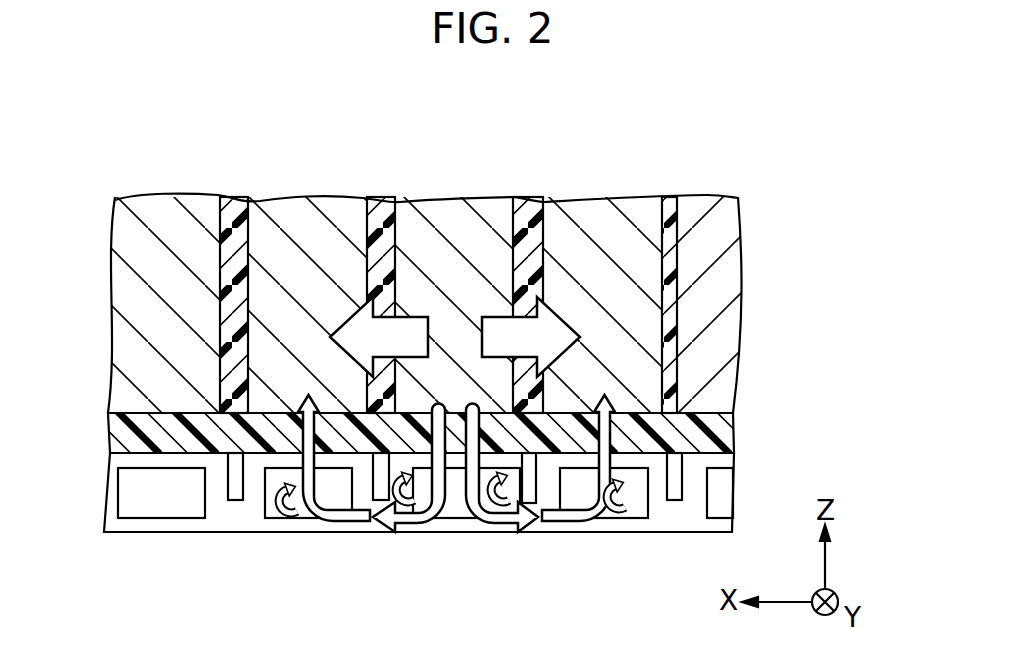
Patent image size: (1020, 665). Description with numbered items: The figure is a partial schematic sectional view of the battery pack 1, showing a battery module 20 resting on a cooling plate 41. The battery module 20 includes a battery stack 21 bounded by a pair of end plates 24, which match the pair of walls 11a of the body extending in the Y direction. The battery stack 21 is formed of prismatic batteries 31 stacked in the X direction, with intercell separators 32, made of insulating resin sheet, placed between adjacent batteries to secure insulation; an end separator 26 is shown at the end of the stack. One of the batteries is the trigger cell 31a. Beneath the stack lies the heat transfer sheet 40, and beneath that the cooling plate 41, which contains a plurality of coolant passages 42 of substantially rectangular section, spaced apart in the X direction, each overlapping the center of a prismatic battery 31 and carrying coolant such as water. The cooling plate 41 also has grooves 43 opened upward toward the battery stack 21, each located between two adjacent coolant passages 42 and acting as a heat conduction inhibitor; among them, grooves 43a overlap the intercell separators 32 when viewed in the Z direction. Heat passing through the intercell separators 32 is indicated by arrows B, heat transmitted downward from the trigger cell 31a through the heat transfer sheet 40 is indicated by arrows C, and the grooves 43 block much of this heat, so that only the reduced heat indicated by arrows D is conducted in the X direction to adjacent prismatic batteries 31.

The battery pack 1 is at (491, 166).
The wall 11a is at (717, 275).
The battery module 20 is at (630, 198).
The battery stack 21 is at (275, 198).
The end plate 24 is at (717, 323).
The end separator 26 is at (669, 200).
The prismatic battery 31 is at (165, 225).
The trigger cell 31a is at (448, 222).
The intercell separator 32 is at (234, 200).
The heat transfer sheet 40 is at (717, 431).
The cooling plate 41 is at (218, 507).
The coolant passage 42 is at (148, 470).
The groove 43 is at (678, 500).
The separator overlap groove 43a is at (235, 500).
The arrow indicating heat transmitted via intercell separators B is at (362, 327).
The arrow indicating heat transmitted downward via heat transfer sheet C is at (428, 522).
The arrow indicating heat conducted in the X direction D is at (350, 521).